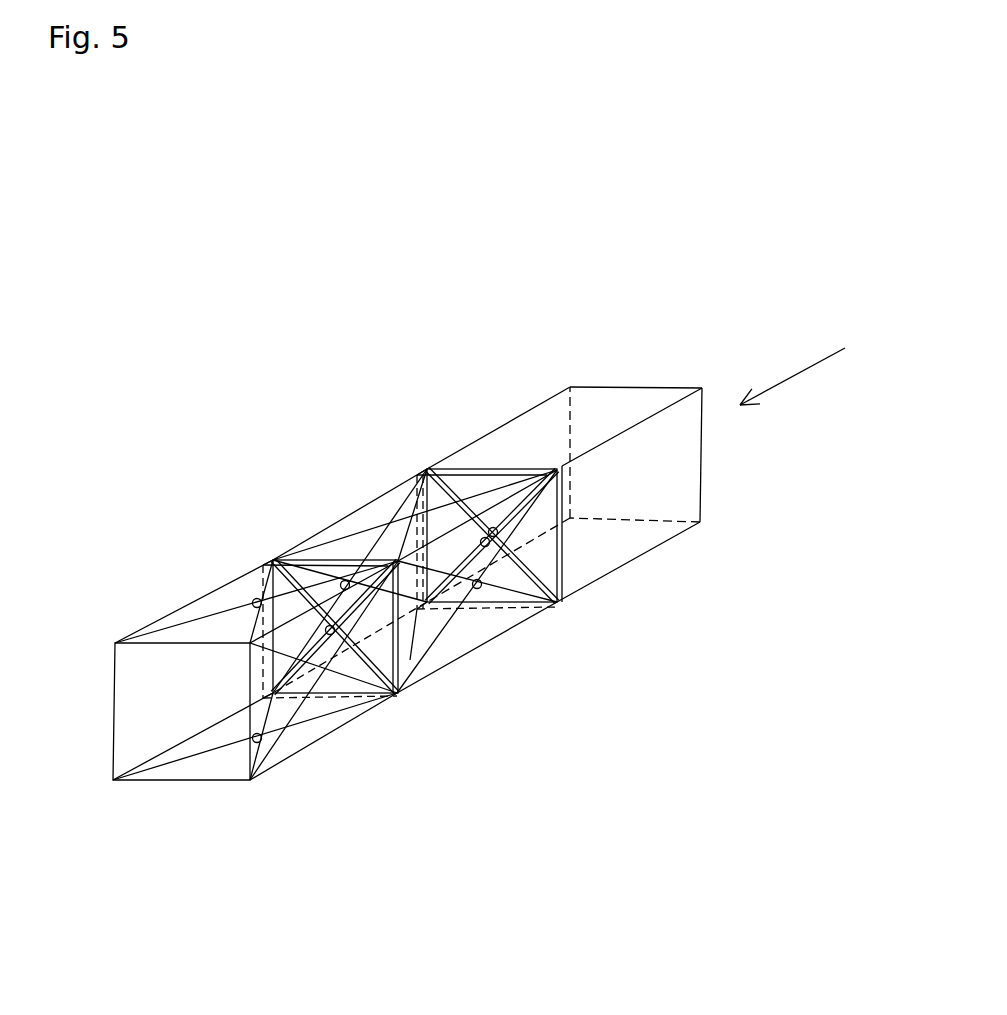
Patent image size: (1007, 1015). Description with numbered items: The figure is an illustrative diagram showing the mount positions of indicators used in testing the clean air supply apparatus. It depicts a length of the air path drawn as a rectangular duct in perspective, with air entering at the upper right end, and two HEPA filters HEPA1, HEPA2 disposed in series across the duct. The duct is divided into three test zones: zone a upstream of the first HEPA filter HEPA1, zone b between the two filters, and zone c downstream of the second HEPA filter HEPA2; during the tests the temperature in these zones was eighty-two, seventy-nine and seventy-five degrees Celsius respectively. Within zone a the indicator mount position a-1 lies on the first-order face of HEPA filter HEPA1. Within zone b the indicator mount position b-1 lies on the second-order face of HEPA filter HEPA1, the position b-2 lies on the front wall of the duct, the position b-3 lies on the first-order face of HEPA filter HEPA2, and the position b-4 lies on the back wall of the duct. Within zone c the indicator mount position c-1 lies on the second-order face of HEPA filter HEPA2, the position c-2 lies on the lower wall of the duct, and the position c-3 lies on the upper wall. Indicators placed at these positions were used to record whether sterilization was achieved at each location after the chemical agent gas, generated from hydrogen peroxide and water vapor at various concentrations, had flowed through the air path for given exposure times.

The HEPA filter HEPA1 is at (462, 470).
The HEPA filter HEPA2 is at (297, 558).
The zone a is at (622, 566).
The zone b is at (470, 650).
The zone c is at (328, 737).
The indicator mount position a-1 is at (485, 537).
The indicator mount position b-1 is at (491, 527).
The indicator mount position b-2 is at (480, 587).
The indicator mount position b-3 is at (417, 609).
The indicator mount position b-4 is at (340, 586).
The indicator mount position c-1 is at (329, 636).
The indicator mount position c-2 is at (262, 739).
The indicator mount position c-3 is at (252, 604).